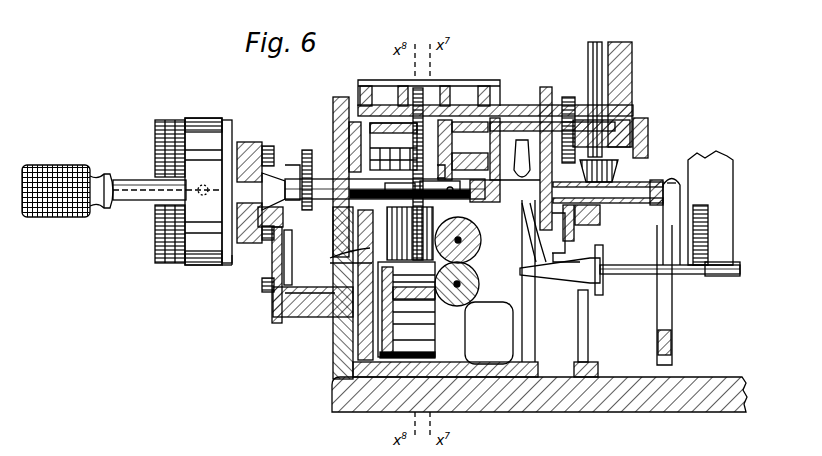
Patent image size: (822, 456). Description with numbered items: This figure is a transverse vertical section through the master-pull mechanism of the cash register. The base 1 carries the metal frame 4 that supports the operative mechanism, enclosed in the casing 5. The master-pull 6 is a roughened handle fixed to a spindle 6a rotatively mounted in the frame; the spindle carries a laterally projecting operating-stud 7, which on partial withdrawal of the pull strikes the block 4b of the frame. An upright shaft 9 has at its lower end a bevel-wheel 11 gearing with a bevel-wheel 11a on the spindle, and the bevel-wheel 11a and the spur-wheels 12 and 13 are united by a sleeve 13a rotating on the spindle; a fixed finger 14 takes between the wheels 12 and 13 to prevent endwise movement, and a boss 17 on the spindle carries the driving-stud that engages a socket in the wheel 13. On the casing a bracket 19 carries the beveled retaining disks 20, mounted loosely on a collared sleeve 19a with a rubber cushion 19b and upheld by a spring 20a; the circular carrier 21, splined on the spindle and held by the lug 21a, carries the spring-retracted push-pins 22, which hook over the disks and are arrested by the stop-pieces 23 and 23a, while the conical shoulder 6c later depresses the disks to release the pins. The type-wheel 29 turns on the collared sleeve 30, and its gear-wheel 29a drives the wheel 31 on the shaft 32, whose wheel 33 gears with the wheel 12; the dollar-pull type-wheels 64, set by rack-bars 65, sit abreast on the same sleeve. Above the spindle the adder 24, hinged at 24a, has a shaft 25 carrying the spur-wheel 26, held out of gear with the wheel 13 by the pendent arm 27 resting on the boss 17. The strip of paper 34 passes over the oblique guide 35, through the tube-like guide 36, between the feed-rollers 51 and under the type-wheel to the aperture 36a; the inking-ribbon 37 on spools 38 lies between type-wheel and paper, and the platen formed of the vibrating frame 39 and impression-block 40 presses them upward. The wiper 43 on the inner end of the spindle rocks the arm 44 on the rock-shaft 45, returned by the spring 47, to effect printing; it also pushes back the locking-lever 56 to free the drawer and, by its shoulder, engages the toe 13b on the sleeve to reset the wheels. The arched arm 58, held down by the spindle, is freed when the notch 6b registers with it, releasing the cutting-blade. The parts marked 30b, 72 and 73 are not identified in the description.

The base 1 is at (738, 380).
The metal frame 4 is at (540, 320).
The block 4b is at (470, 146).
The casing 5 is at (345, 95).
The master-pull 6 is at (60, 170).
The spindle 6a is at (140, 183).
The deep notch 6b is at (333, 188).
The conical sleeve 6c is at (284, 205).
The operating-stud 7 is at (441, 171).
The upright shaft 9 is at (589, 99).
The bevel-wheel 11 is at (608, 181).
The bevel-wheel 11a is at (591, 217).
The spur-wheel 12 is at (577, 223).
The spur-wheel 13 is at (544, 233).
The sleeve 13a is at (640, 205).
The toe 13b is at (665, 183).
The fixed finger 14 is at (566, 250).
The boss 17 is at (485, 188).
The bracket 19 is at (272, 322).
The collared sleeve 19a is at (292, 176).
The rubber cushion 19b is at (306, 160).
The circular disk 20 is at (237, 174).
The spring 20a is at (290, 232).
The circular carrier 21 is at (208, 118).
The lug 21a is at (234, 268).
The push-pins 22 is at (222, 128).
The stop-piece 23 is at (264, 157).
The stop-piece 23a is at (222, 156).
The adder 24 is at (429, 86).
The hinge 24a is at (350, 140).
The adder shaft 25 is at (526, 116).
The spur-wheel 26 is at (546, 153).
The pendent arm 27 is at (522, 158).
The type-wheel 29 is at (442, 170).
The gear-wheel 29a is at (492, 228).
The collared sleeve 30 is at (400, 193).
The shaft collar 30b is at (435, 190).
The wheel 31 is at (418, 95).
The shaft 32 is at (498, 149).
The wheel 33 is at (571, 122).
The roll of paper 34 is at (548, 285).
The oblique guide 35 is at (724, 276).
The tube-like guide 36 is at (604, 270).
The aperture 36a is at (293, 270).
The inking-ribbon 37 is at (406, 309).
The spools 38 is at (407, 351).
The vibrating frame 39 is at (414, 293).
The impression-block 40 is at (329, 296).
The wiper 43 is at (670, 182).
The arm 44 is at (708, 222).
The rock-shaft 45 is at (622, 264).
The spring 47 is at (590, 328).
The feed-rollers 51 is at (489, 333).
The locking-lever 56 is at (654, 310).
The arched arm 58 is at (340, 251).
The type-wheel 64 is at (351, 255).
The rack-bar 65 is at (393, 146).
The blade 72 is at (533, 232).
The bar 73 is at (504, 182).